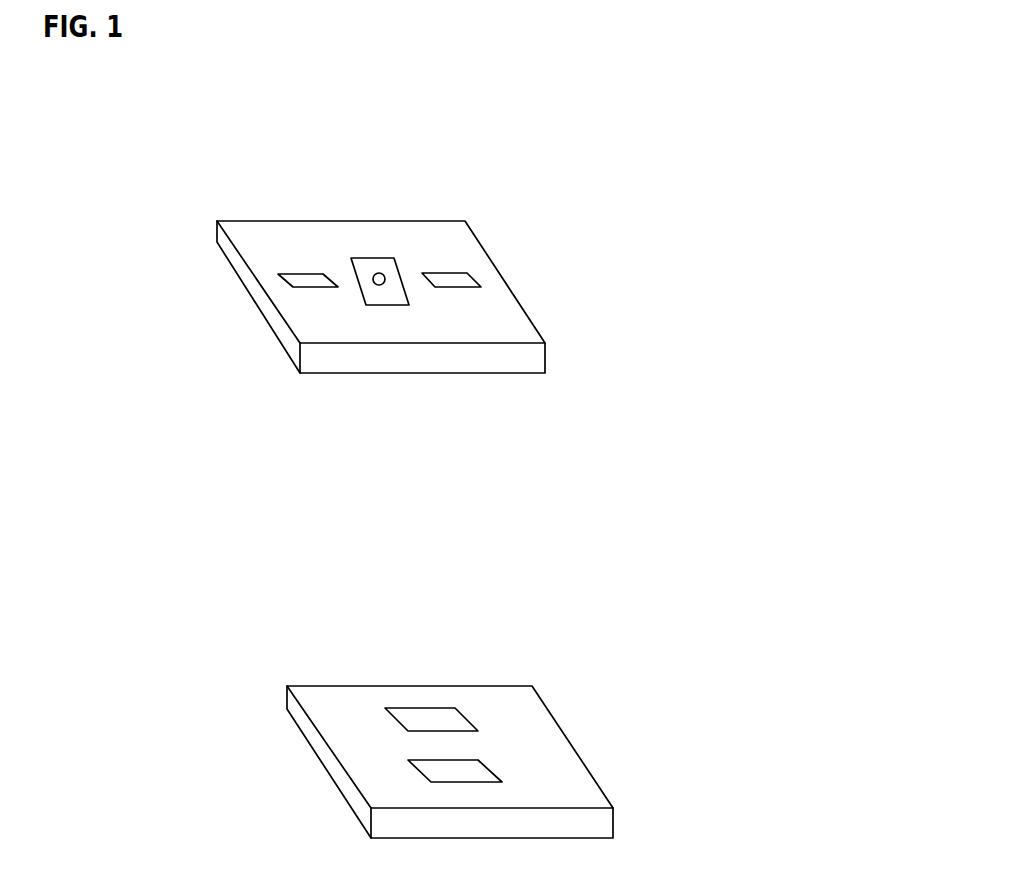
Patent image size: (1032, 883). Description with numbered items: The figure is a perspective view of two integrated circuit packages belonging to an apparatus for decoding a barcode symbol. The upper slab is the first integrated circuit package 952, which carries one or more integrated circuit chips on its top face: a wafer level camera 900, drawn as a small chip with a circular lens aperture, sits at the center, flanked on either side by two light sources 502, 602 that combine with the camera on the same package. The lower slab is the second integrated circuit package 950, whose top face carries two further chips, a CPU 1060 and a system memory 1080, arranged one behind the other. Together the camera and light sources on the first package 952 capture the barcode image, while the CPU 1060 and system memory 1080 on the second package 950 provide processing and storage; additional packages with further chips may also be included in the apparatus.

The light source 502 is at (306, 280).
The light source 602 is at (465, 274).
The wafer level camera 900 is at (374, 258).
The first integrated circuit package 952 is at (525, 315).
The second integrated circuit package 950 is at (575, 753).
The CPU 1060 is at (425, 715).
The system memory 1080 is at (425, 774).